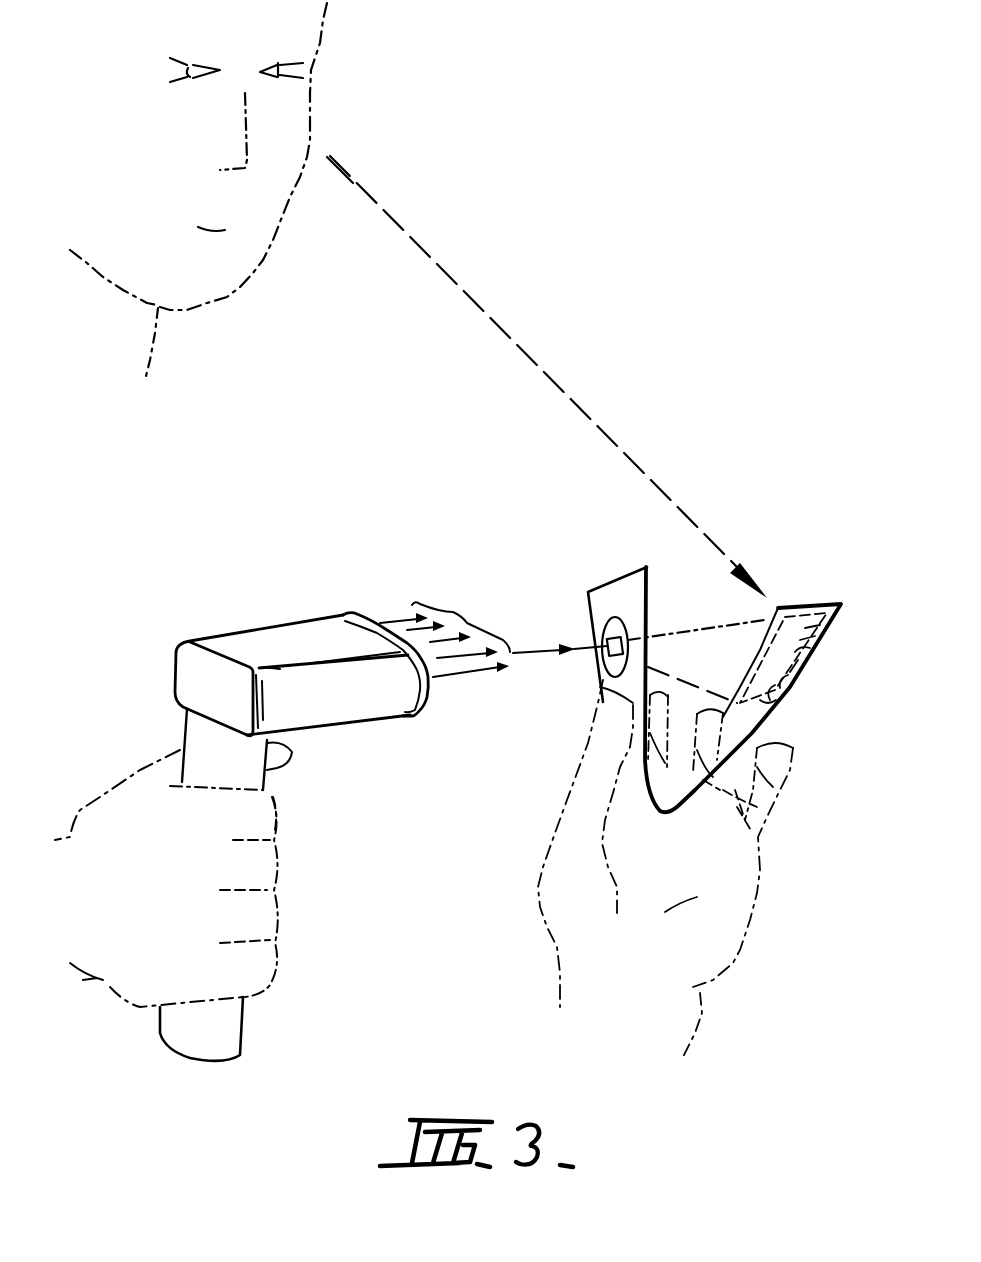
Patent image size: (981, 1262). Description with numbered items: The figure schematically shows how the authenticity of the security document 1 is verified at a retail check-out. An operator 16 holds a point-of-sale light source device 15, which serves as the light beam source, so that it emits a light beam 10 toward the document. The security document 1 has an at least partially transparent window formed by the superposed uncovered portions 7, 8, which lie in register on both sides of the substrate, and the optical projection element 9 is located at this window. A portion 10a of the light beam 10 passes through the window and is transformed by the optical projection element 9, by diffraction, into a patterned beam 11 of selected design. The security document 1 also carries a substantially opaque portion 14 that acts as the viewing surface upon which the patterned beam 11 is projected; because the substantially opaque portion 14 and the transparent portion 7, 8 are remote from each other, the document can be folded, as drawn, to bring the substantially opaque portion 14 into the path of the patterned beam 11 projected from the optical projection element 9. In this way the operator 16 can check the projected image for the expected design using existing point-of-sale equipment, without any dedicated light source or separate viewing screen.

The security document 1 is at (593, 557).
The uncovered portion 7 is at (553, 688).
The uncovered portion 8 is at (603, 662).
The optical projection element 9 is at (617, 630).
The light beam 10 is at (457, 607).
The portion of a light beam 10a is at (547, 650).
The patterned beam 11 is at (733, 654).
The substantially opaque portion 14 is at (790, 687).
The point-of-sale light source device 15 is at (238, 642).
The operator 16 is at (240, 287).